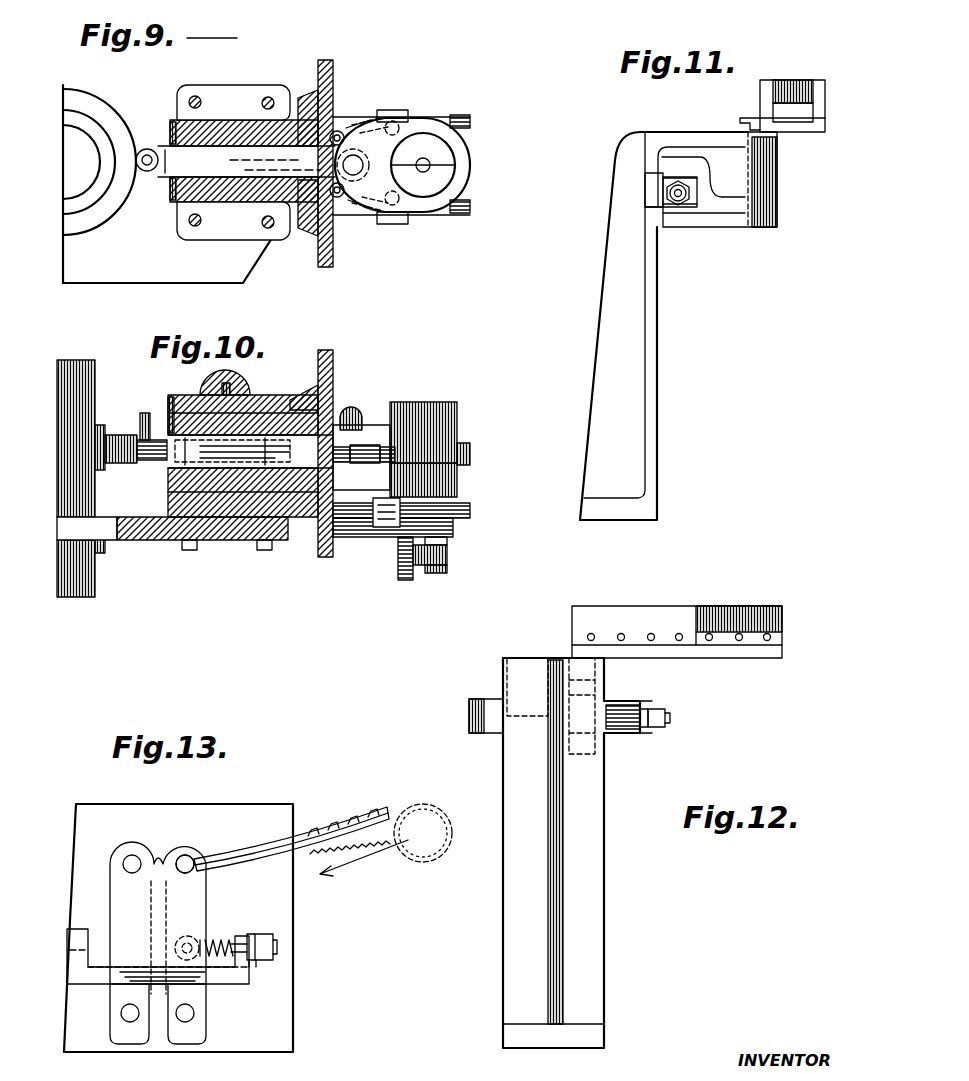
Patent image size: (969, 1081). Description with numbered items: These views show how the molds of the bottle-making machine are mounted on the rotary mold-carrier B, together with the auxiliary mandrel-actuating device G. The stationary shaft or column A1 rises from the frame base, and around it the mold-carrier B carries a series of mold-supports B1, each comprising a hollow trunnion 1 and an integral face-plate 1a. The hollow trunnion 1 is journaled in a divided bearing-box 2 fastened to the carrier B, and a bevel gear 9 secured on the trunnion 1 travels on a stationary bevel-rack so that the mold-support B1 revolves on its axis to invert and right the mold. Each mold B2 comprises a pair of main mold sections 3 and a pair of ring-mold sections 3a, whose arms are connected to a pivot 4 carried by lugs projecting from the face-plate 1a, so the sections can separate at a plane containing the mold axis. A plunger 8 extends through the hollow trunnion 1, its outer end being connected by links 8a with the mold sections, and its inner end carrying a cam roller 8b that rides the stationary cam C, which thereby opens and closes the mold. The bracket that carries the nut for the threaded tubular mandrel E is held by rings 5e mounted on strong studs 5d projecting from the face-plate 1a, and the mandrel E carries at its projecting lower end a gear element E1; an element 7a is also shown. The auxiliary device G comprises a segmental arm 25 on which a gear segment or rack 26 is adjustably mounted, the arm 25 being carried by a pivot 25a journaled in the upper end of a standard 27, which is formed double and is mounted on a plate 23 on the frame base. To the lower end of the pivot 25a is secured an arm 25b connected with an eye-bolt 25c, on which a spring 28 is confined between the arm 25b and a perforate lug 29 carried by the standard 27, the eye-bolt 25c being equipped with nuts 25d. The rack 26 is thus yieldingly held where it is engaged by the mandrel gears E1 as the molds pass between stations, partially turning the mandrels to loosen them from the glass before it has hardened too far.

In FIG. 9, the hollow trunnion 1 is at (232, 198).
In FIG. 10, the hollow trunnion 1 is at (270, 405).
In FIG. 9, the face-plate 1a is at (320, 252).
In FIG. 10, the face-plate 1a is at (318, 540).
In FIG. 9, the divided bearing-box 2 is at (216, 100).
In FIG. 10, the divided bearing-box 2 is at (190, 404).
In FIG. 9, the main mold sections 3 is at (455, 150).
In FIG. 10, the main mold sections 3 is at (428, 405).
In FIG. 10, the ring-mold sections 3a is at (457, 492).
In FIG. 9, the pivot 4 is at (357, 166).
In FIG. 10, the pivot 4 is at (350, 416).
In FIG. 9, the studs 5d is at (466, 115).
In FIG. 10, the studs 5d is at (470, 512).
In FIG. 9, the rings 5e is at (393, 110).
In FIG. 10, the rings 5e is at (382, 522).
In FIG. 10, the bracket arm 7a is at (405, 582).
In FIG. 9, the plunger 8 is at (246, 161).
In FIG. 10, the plunger 8 is at (212, 545).
In FIG. 9, the links 8a is at (352, 130).
In FIG. 10, the links 8a is at (362, 447).
In FIG. 9, the cam roller 8b is at (147, 172).
In FIG. 10, the cam roller 8b is at (140, 462).
In FIG. 9, the bevel gear 9 is at (308, 95).
In FIG. 10, the bevel gear 9 is at (304, 387).
In FIG. 13, the plate 23 is at (254, 1044).
In FIG. 12, the segmental arm 25 is at (632, 615).
In FIG. 13, the segmental arm 25 is at (259, 853).
In FIG. 11, the pivot 25a is at (780, 166).
In FIG. 12, the pivot 25a is at (608, 682).
In FIG. 13, the pivot 25a is at (218, 836).
In FIG. 11, the arm 25b is at (723, 213).
In FIG. 13, the arm 25b is at (198, 901).
In FIG. 11, the eye-bolt 25c is at (682, 213).
In FIG. 12, the eye-bolt 25c is at (670, 720).
In FIG. 13, the eye-bolt 25c is at (277, 945).
In FIG. 11, the nuts 25d is at (662, 194).
In FIG. 12, the nuts 25d is at (650, 709).
In FIG. 13, the nuts 25d is at (259, 968).
In FIG. 11, the gear segment 26 is at (800, 84).
In FIG. 12, the gear segment 26 is at (752, 611).
In FIG. 13, the gear segment 26 is at (389, 813).
In FIG. 11, the standard 27 is at (632, 342).
In FIG. 12, the standard 27 is at (584, 880).
In FIG. 13, the standard 27 is at (132, 910).
In FIG. 12, the spring 28 is at (618, 740).
In FIG. 13, the spring 28 is at (200, 945).
In FIG. 11, the perforate lug 29 is at (668, 180).
In FIG. 12, the perforate lug 29 is at (642, 735).
In FIG. 13, the perforate lug 29 is at (247, 938).
In FIG. 9, the stationary shaft A1 is at (82, 158).
In FIG. 10, the stationary shaft A1 is at (78, 365).
In FIG. 9, the rotary mold-carrier B is at (268, 85).
In FIG. 10, the rotary mold-carrier B is at (157, 540).
In FIG. 9, the mold-support B1 is at (333, 62).
In FIG. 10, the mold-support B1 is at (333, 352).
In FIG. 9, the mold B2 is at (420, 118).
In FIG. 10, the mold B2 is at (458, 412).
In FIG. 9, the stationary cam C is at (103, 122).
In FIG. 10, the stationary cam C is at (115, 433).
In FIG. 10, the threaded tubular mandrel E is at (432, 566).
In FIG. 10, the gear element E1 is at (447, 560).
In FIG. 13, the gear element E1 is at (392, 830).
In FIG. 11, the auxiliary mandrel-actuating device G is at (704, 296).
In FIG. 12, the auxiliary mandrel-actuating device G is at (709, 704).
In FIG. 13, the auxiliary mandrel-actuating device G is at (318, 800).